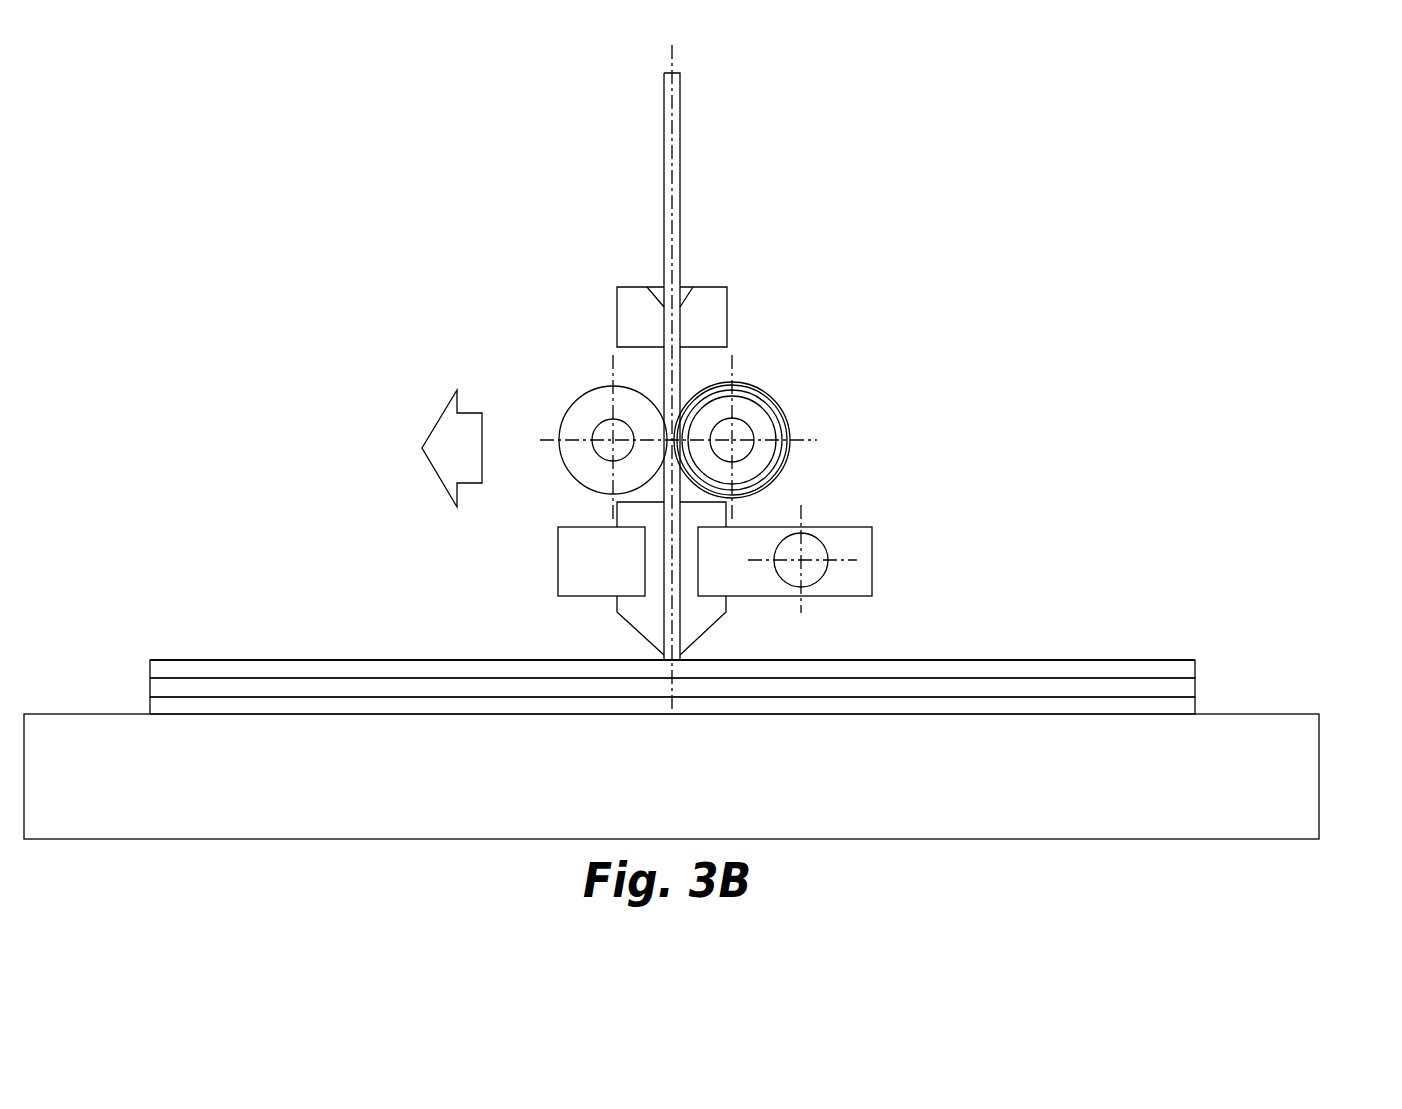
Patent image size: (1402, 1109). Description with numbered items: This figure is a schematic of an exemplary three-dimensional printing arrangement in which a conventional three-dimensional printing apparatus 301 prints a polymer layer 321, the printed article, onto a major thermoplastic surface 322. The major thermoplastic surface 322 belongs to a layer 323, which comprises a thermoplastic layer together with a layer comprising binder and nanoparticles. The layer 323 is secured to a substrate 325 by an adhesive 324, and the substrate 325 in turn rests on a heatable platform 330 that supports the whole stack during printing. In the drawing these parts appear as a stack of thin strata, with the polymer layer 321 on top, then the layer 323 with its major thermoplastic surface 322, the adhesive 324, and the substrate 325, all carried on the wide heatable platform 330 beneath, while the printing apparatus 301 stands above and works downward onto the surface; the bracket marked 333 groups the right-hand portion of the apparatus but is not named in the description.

The 3-D printing apparatus 301 is at (522, 642).
The roller and block assembly 333 is at (1214, 276).
The polymer layer 321 is at (902, 657).
The major thermoplastic surface 322 is at (1057, 658).
The layer 323 is at (937, 659).
The adhesive 324 is at (1173, 696).
The substrate 325 is at (1140, 677).
The heatable platform 330 is at (1302, 783).